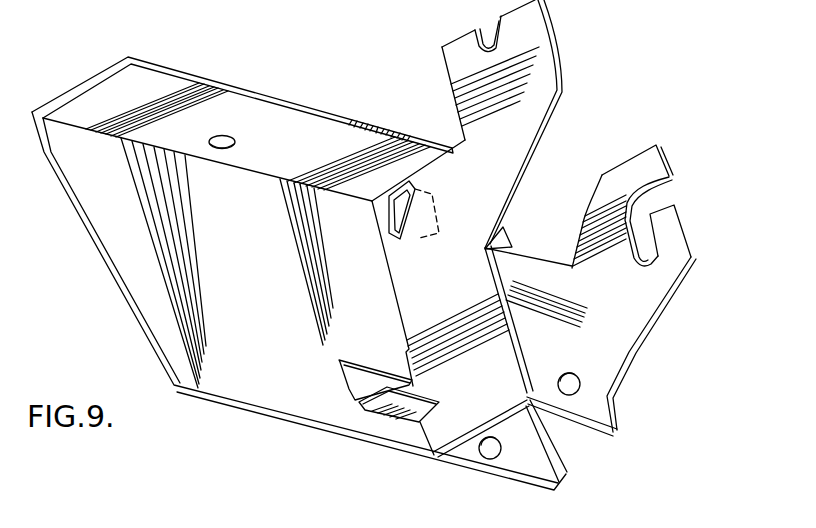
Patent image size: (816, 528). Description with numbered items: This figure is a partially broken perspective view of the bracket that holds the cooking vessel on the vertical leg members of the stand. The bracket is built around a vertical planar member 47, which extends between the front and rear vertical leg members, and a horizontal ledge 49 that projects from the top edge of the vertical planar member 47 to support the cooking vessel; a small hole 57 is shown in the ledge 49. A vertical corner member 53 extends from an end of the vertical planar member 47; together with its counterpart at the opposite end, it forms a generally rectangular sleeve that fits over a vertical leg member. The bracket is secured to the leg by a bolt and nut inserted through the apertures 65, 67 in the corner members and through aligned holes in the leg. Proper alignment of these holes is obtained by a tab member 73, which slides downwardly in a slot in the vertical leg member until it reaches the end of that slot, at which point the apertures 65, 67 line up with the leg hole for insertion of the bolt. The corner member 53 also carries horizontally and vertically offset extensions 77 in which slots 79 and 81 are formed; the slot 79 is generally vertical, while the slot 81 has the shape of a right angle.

The vertical planar member 47 is at (133, 240).
The horizontal ledge 49 is at (148, 80).
The vertical corner member 53 is at (635, 119).
The hole in top flange 57 is at (236, 144).
The aperture 65 is at (570, 396).
The aperture 67 is at (486, 451).
The tab member 73 is at (414, 222).
The extension 77 is at (547, 70).
The slot 79 is at (491, 25).
The slot 81 is at (672, 190).